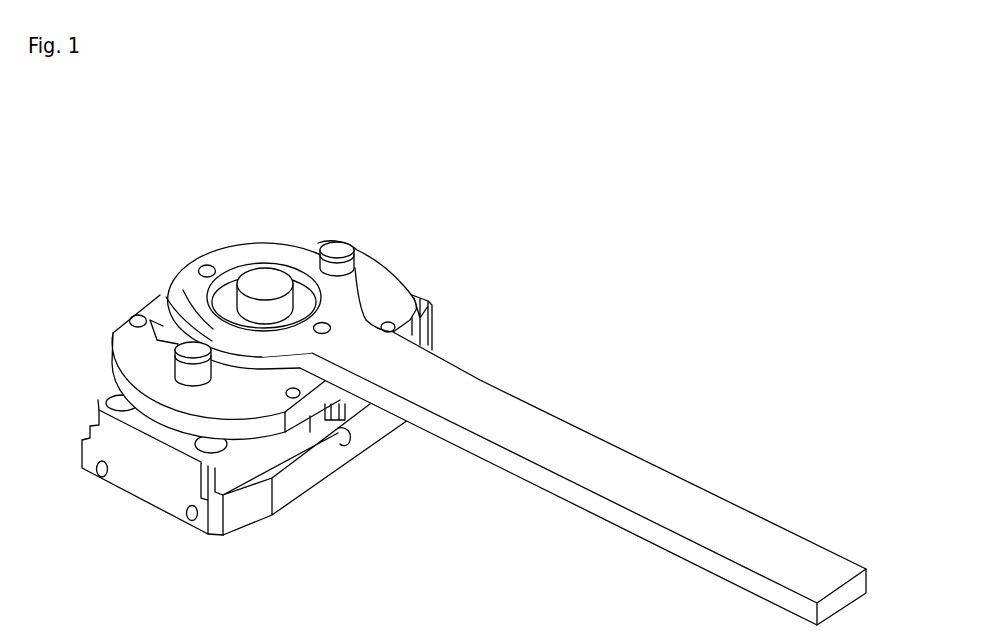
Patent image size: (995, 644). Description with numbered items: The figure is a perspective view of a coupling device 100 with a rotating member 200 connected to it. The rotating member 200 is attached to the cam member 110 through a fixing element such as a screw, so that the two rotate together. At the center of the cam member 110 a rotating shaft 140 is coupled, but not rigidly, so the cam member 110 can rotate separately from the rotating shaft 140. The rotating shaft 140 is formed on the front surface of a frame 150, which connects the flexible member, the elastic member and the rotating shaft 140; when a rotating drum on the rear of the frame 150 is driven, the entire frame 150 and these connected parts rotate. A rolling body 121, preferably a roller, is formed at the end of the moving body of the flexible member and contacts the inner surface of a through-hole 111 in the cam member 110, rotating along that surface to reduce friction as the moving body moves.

The coupling device 100 is at (154, 153).
The cam member 110 is at (125, 324).
The through-hole 111 is at (160, 303).
The rolling body 121 is at (178, 371).
The rotating shaft 140 is at (265, 277).
The frame 150 is at (290, 494).
The rotating member 200 is at (680, 487).